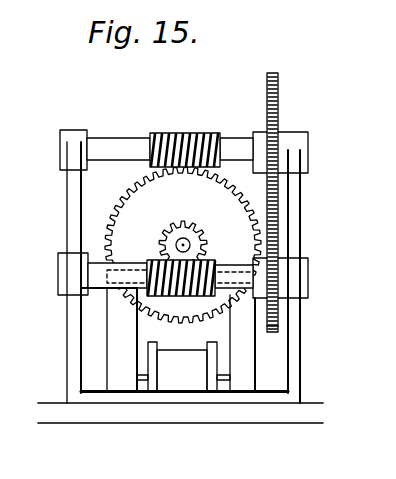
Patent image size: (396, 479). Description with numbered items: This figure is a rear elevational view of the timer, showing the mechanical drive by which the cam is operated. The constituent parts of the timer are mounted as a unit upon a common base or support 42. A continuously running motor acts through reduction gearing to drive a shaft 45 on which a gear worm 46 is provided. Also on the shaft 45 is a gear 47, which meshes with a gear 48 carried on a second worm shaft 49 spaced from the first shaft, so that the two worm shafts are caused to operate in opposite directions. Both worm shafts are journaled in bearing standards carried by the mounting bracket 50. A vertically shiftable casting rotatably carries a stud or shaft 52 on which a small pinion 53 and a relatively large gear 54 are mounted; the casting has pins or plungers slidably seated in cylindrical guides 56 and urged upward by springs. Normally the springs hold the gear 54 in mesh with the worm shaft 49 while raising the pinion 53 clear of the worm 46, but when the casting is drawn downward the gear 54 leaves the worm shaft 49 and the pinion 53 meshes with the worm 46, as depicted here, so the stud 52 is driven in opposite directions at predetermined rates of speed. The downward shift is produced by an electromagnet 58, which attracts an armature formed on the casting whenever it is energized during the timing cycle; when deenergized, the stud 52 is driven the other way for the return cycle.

The common base or support 42 is at (156, 419).
The shaft 45 is at (106, 291).
The gear worm 46 is at (211, 270).
The gear 47 is at (275, 333).
The gear 48 is at (281, 94).
The worm shaft 49 is at (122, 148).
The mounting bracket 50 is at (302, 399).
The stud or shaft 52 is at (190, 240).
The small pinion 53 is at (175, 230).
The relatively large gear 54 is at (124, 200).
The cylindrical guides 56 is at (116, 366).
The electromagnet 58 is at (190, 374).